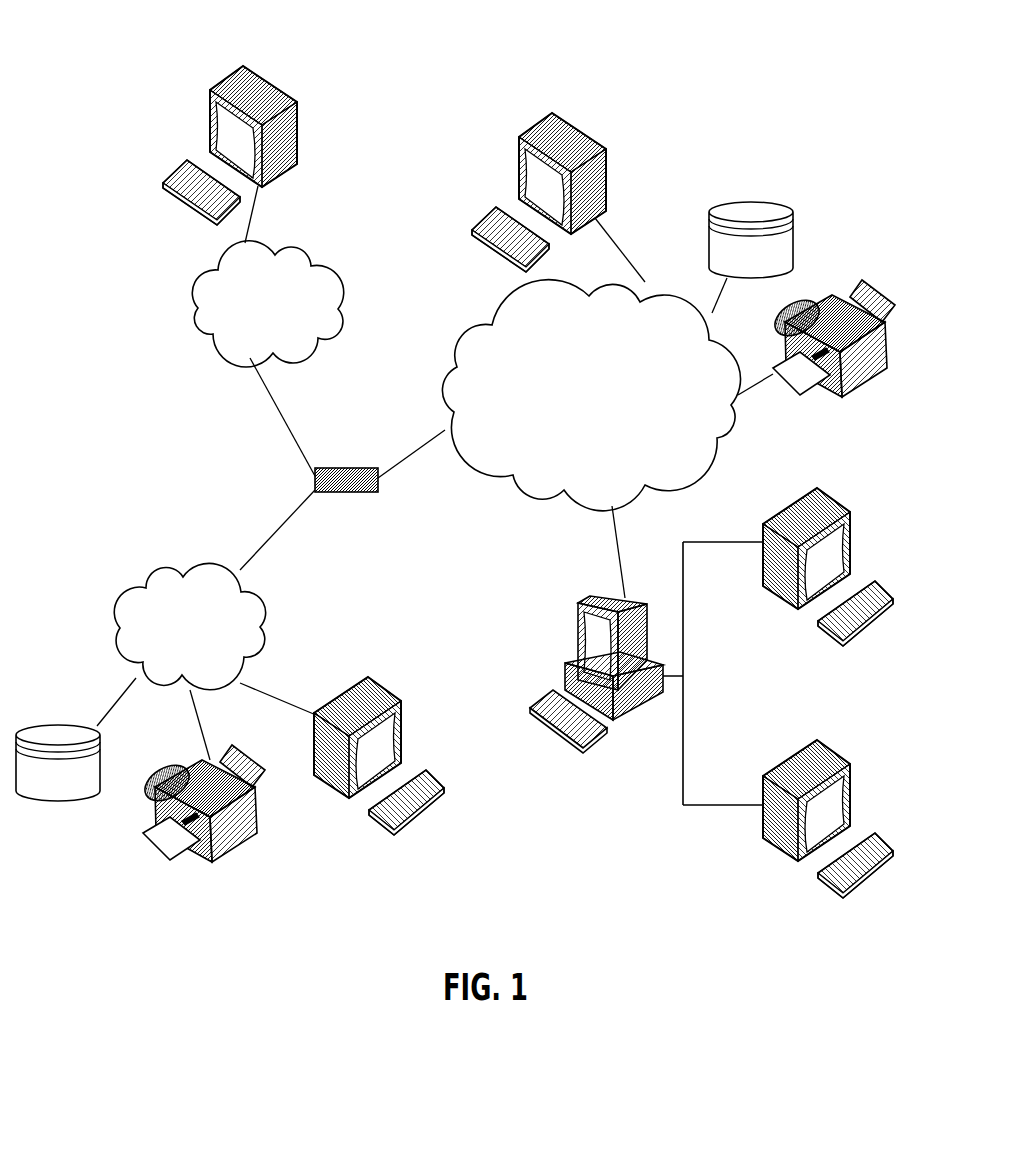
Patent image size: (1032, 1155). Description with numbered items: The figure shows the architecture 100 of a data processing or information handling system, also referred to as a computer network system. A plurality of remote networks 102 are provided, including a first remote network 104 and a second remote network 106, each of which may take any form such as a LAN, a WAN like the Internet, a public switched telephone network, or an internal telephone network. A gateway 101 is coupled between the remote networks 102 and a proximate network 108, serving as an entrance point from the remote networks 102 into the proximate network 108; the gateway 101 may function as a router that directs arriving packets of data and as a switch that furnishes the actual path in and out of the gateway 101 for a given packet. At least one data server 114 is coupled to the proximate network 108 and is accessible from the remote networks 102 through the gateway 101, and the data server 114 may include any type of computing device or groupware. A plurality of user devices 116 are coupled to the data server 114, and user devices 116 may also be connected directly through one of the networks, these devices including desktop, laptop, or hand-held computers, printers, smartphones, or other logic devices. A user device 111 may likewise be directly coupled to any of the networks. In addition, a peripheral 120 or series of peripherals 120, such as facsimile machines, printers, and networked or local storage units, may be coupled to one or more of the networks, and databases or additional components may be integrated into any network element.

The architecture 100 is at (138, 44).
The gateway 101 is at (330, 467).
The remote networks 102 is at (165, 374).
The first remote network 104 is at (118, 594).
The second remote network 106 is at (338, 271).
The proximate network 108 is at (697, 468).
The user device 111 is at (606, 151).
The data server 114 is at (577, 620).
The user devices 116 is at (298, 112).
The peripheral 120 is at (793, 210).